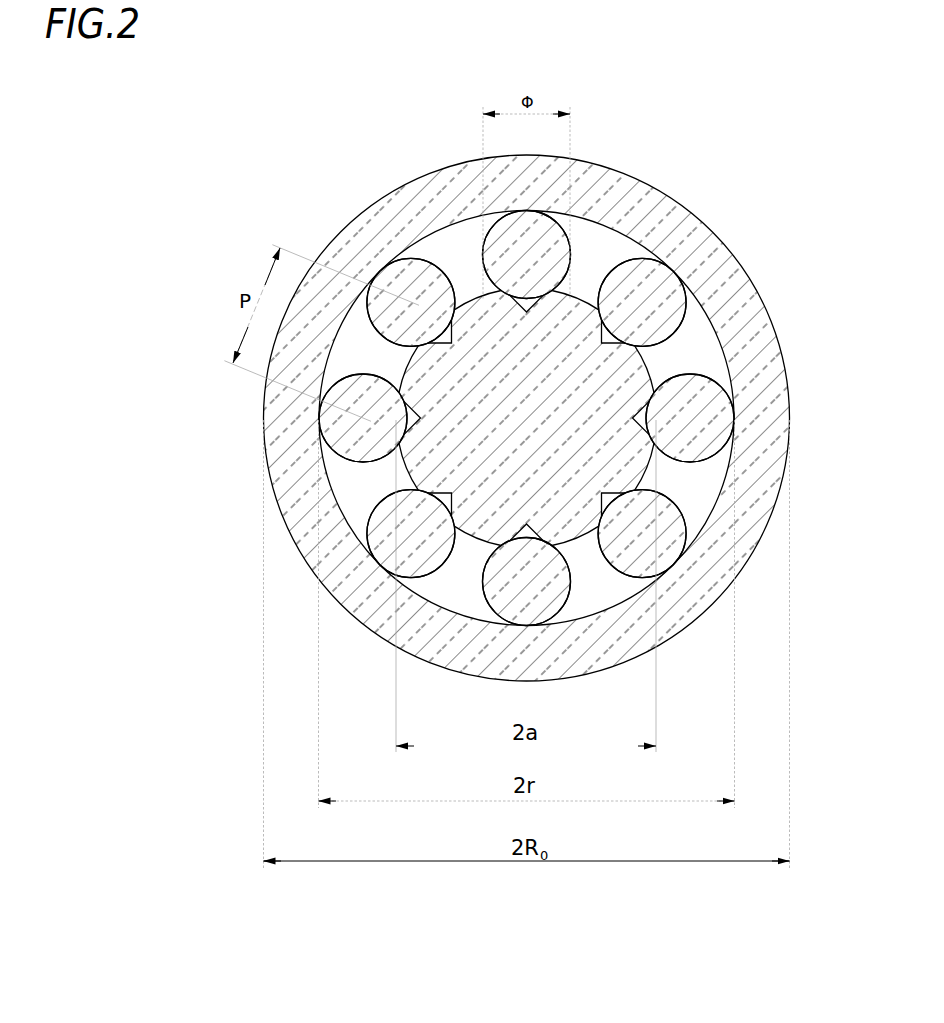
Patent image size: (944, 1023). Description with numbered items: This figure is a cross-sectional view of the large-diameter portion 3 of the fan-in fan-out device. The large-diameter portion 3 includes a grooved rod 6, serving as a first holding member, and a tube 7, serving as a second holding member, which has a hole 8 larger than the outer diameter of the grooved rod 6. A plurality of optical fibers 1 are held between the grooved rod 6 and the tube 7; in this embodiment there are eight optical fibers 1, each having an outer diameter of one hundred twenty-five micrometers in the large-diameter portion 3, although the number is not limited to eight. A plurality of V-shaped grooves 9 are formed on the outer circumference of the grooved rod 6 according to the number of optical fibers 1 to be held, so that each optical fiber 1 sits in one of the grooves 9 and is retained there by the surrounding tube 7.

The optical fiber 1 is at (417, 255).
The large-diameter portion 3 is at (560, 397).
The grooved rod 6 is at (653, 365).
The tube 7 is at (787, 353).
The hole 8 is at (595, 583).
The V-shaped groove 9 is at (673, 235).